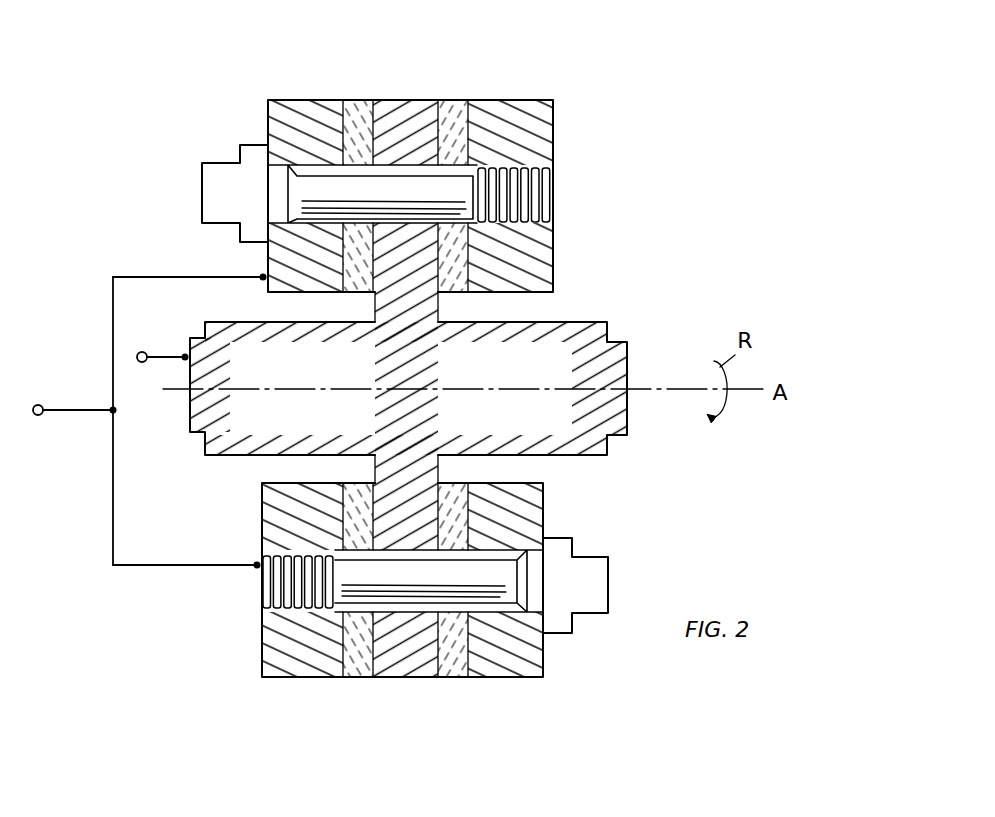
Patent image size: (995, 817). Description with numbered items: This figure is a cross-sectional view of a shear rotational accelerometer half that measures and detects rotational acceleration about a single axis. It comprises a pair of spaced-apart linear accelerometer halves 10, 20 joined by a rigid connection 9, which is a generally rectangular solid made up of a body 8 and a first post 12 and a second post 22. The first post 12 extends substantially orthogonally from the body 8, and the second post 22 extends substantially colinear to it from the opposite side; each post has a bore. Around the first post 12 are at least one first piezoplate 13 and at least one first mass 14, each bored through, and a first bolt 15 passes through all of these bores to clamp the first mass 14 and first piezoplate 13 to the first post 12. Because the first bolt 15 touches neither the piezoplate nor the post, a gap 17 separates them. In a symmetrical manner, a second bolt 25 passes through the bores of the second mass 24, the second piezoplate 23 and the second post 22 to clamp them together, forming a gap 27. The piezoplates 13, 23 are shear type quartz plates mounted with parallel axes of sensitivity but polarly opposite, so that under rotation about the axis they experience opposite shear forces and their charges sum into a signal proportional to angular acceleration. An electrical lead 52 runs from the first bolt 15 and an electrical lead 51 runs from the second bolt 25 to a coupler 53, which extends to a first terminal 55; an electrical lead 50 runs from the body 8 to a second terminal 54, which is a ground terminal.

The body 8 is at (573, 330).
The rigid connection 9 is at (443, 376).
The first linear accelerometer half 10 is at (453, 170).
The first post 12 is at (400, 113).
The first piezoplate 13 is at (362, 107).
The first mass 14 is at (298, 112).
The first bolt 15 is at (215, 185).
The gap 17 is at (453, 170).
The second linear accelerometer half 20 is at (377, 599).
The second post 22 is at (375, 468).
The second piezoplate 23 is at (360, 663).
The second mass 24 is at (307, 657).
The second bolt 25 is at (277, 587).
The gap 27 is at (407, 607).
The electrical lead 50 is at (170, 355).
The electrical lead 51 is at (113, 522).
The electrical lead 52 is at (143, 275).
The coupler 53 is at (113, 412).
The second terminal 54 is at (157, 340).
The first terminal 55 is at (32, 410).